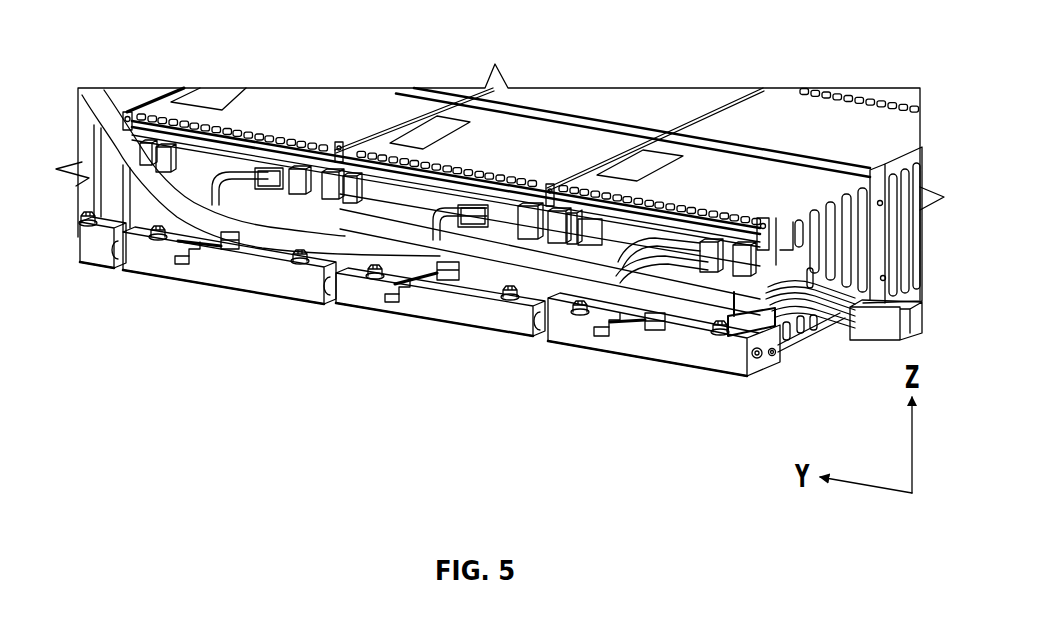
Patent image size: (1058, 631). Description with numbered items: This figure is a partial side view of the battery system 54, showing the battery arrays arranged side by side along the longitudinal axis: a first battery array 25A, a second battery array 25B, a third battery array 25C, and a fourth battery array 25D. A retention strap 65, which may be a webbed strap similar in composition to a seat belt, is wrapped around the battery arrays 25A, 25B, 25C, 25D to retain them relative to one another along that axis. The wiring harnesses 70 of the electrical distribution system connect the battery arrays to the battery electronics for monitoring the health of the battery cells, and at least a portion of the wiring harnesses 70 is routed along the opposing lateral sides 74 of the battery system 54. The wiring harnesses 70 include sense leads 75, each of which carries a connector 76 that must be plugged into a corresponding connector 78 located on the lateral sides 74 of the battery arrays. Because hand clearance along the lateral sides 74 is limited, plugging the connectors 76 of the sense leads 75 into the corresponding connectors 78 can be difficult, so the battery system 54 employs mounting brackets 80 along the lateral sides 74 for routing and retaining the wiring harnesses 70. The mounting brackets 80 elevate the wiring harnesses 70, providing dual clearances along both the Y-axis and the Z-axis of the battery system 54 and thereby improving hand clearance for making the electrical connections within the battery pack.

The first battery array 25A is at (853, 120).
The second battery array 25B is at (626, 101).
The third battery array 25C is at (315, 100).
The fourth battery array 25D is at (128, 98).
The battery system 54 is at (558, 74).
The retention strap 65 is at (757, 149).
The wiring harness 70 is at (438, 253).
The lateral side 74 is at (592, 258).
The sense lead 75 is at (250, 152).
The connector 76 is at (273, 183).
The connector 78 is at (270, 172).
The mounting bracket 80 is at (162, 250).